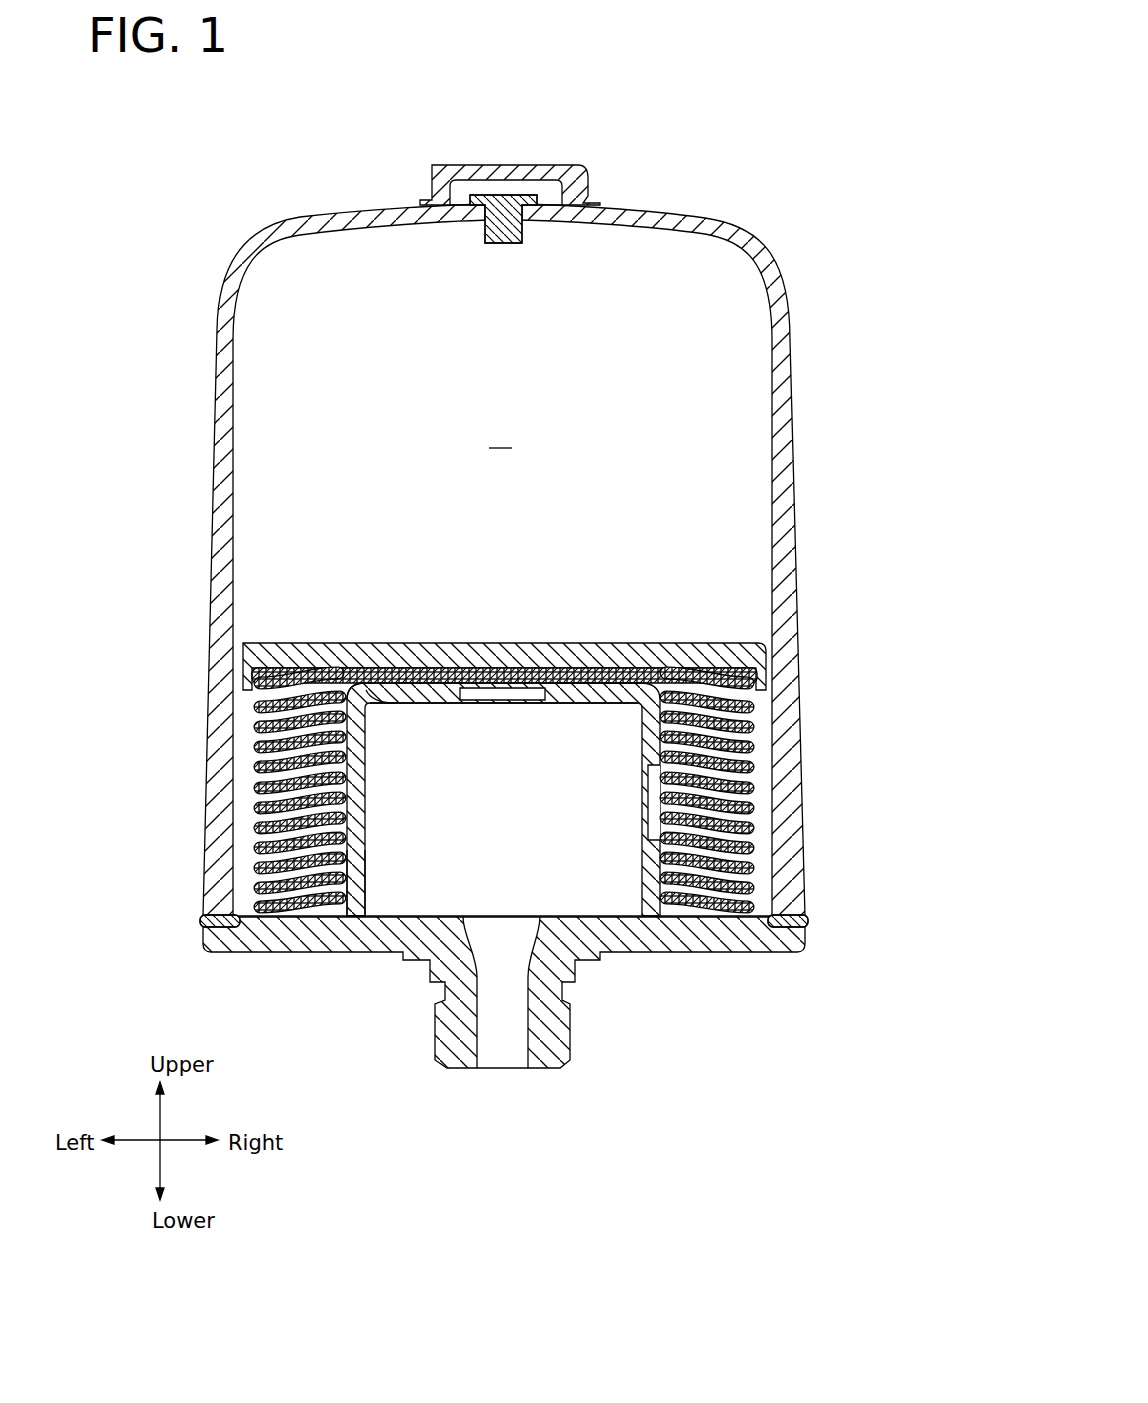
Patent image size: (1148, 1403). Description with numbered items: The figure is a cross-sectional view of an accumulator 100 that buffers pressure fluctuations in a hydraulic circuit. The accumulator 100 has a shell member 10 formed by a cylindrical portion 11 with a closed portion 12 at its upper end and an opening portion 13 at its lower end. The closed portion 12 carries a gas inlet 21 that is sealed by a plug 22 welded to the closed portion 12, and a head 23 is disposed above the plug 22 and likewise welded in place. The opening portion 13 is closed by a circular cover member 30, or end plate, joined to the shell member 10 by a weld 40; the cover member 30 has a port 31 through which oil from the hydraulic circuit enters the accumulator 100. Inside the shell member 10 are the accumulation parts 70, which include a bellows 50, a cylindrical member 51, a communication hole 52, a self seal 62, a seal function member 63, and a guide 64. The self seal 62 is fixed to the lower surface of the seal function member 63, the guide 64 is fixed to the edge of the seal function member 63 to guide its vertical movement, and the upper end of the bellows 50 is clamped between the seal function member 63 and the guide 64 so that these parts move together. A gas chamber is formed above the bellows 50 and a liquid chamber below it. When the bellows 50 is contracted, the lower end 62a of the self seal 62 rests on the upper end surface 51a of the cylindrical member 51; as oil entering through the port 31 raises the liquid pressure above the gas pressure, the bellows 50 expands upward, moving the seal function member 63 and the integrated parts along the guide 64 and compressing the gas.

The accumulator 100 is at (658, 116).
The shell member 10 is at (810, 266).
The cylindrical portion 11 is at (800, 628).
The closed portion 12 is at (672, 215).
The opening portion 13 is at (805, 872).
The gas inlet 21 is at (480, 252).
The plug 22 is at (500, 213).
The head 23 is at (554, 165).
The cover member 30 is at (730, 956).
The port 31 is at (507, 1085).
The weld 40 is at (812, 920).
The bellows 50 is at (240, 888).
The cylindrical member 51 is at (347, 912).
The upper end surface 51a is at (614, 672).
The communication hole 52 is at (516, 714).
The self seal 62 is at (350, 690).
The lower end 62a is at (380, 706).
The seal function member 63 is at (390, 648).
The guide 64 is at (760, 668).
The accumulation parts 70 is at (511, 800).